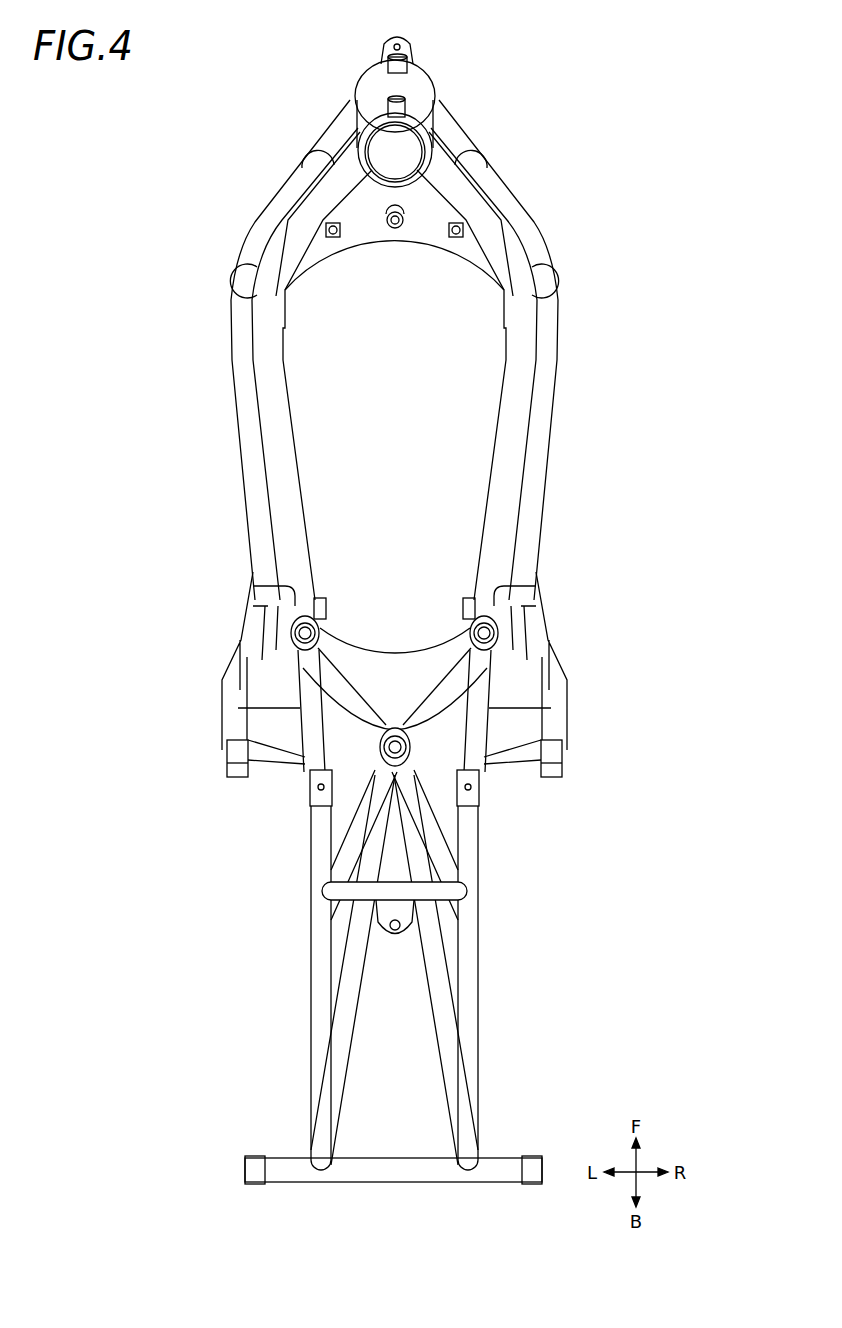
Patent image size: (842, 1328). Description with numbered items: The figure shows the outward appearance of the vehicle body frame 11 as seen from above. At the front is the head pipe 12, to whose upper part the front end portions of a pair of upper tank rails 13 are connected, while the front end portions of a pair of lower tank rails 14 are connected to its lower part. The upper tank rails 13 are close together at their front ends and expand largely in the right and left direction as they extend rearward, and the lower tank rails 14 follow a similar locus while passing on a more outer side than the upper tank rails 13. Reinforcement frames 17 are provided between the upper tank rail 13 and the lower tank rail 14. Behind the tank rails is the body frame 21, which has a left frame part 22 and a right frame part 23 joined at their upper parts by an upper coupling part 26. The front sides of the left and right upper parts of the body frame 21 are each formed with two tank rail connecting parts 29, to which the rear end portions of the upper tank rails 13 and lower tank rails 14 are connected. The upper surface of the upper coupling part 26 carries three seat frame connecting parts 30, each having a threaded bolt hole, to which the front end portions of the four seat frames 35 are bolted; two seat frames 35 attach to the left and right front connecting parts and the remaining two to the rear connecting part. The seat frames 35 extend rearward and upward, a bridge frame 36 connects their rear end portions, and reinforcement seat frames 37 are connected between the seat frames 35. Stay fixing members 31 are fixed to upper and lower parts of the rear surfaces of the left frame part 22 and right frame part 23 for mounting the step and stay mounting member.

The vehicle body frame 11 is at (266, 89).
The head pipe 12 is at (422, 70).
The upper tank rail 13 is at (268, 356).
The lower tank rail 14 is at (256, 435).
The reinforcement frame 17 is at (300, 187).
The body frame 21 is at (565, 648).
The left frame part 22 is at (250, 656).
The right frame part 23 is at (530, 690).
The upper coupling part 26 is at (410, 665).
The tank rail connecting part 29 is at (268, 590).
The seat frame connecting part 30 is at (320, 612).
The stay fixing member 31 is at (236, 755).
The seat frame 35 is at (318, 945).
The bridge frame 36 is at (398, 1168).
The reinforcement seat frame 37 is at (352, 832).